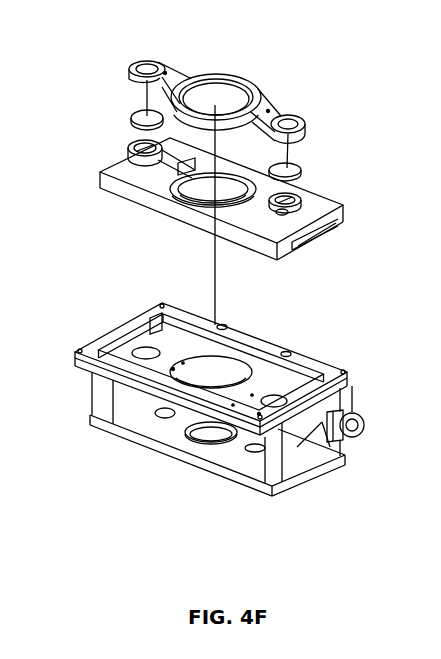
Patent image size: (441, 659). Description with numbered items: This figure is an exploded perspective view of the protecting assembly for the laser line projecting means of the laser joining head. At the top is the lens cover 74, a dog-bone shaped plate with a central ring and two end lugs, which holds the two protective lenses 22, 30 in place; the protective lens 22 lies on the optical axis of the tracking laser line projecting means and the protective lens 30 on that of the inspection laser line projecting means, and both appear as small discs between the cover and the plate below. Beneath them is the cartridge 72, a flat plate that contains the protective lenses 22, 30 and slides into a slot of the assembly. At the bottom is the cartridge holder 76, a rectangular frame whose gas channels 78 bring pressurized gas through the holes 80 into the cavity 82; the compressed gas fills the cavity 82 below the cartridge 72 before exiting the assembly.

The protective lens 22 is at (292, 163).
The protective lens 30 is at (128, 108).
The cartridge 72 is at (330, 198).
The lens cover 74 is at (232, 87).
The cartridge holder 76 is at (348, 368).
The gas channels 78 is at (290, 352).
The holes 80 is at (258, 415).
The cavity 82 is at (181, 349).